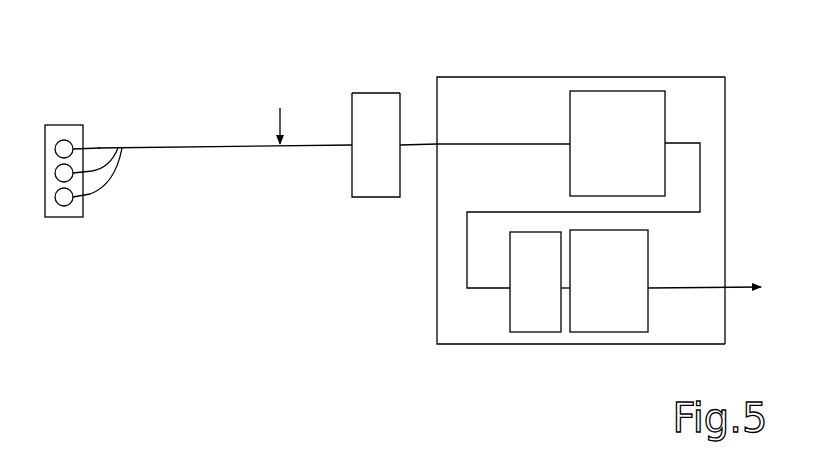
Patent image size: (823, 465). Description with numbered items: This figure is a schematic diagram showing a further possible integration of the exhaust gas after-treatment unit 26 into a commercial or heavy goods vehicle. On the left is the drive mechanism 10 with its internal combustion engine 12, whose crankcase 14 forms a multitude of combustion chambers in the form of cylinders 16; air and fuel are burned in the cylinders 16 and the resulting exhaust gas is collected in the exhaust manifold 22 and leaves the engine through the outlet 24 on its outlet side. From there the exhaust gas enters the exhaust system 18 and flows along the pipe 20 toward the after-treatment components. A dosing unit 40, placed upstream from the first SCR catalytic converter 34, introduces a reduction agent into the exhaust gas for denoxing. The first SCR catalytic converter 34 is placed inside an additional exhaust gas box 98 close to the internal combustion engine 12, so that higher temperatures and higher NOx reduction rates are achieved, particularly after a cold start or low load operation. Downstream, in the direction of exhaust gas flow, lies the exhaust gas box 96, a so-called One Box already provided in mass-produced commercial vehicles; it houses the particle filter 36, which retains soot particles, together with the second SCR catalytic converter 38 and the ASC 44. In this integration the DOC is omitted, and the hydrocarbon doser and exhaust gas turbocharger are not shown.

The drive mechanism 10 is at (83, 175).
The internal combustion engine 12 is at (84, 219).
The crankcase 14 is at (65, 125).
The cylinders 16 is at (54, 156).
The exhaust system 18 is at (172, 131).
The pipe 20 is at (145, 154).
The exhaust manifold 22 is at (90, 148).
The outlet 24 is at (95, 194).
The exhaust gas after-treatment unit 26 is at (607, 203).
The first SCR catalytic converter 34 is at (371, 199).
The particle filter 36 is at (613, 91).
The second SCR catalytic converter 38 is at (535, 332).
The dosing unit 40 is at (283, 122).
The ASC 44 is at (603, 332).
The exhaust gas box 96 is at (726, 125).
The additional exhaust gas box 98 is at (375, 93).